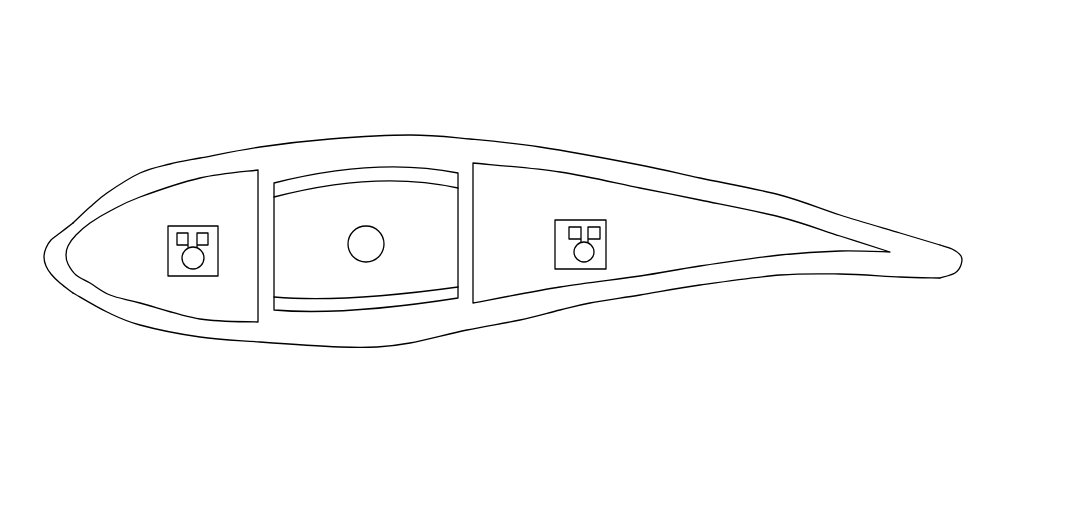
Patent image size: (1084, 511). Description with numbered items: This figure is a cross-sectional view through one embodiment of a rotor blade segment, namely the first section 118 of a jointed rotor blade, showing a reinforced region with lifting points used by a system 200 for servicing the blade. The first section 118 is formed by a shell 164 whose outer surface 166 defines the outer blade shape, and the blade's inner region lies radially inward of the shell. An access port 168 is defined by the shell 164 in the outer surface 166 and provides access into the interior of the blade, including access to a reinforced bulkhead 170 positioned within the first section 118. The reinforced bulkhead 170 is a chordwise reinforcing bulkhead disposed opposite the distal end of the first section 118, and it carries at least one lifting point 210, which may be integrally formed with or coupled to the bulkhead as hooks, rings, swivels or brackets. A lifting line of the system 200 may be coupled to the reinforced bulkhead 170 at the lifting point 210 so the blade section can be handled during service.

The system 200 is at (852, 117).
The first section 118 is at (875, 220).
The outer surface 166 is at (740, 185).
The shell 164 is at (508, 313).
The access port 168 is at (498, 300).
The reinforced bulkhead 170 is at (253, 308).
The lifting point 210 is at (193, 238).